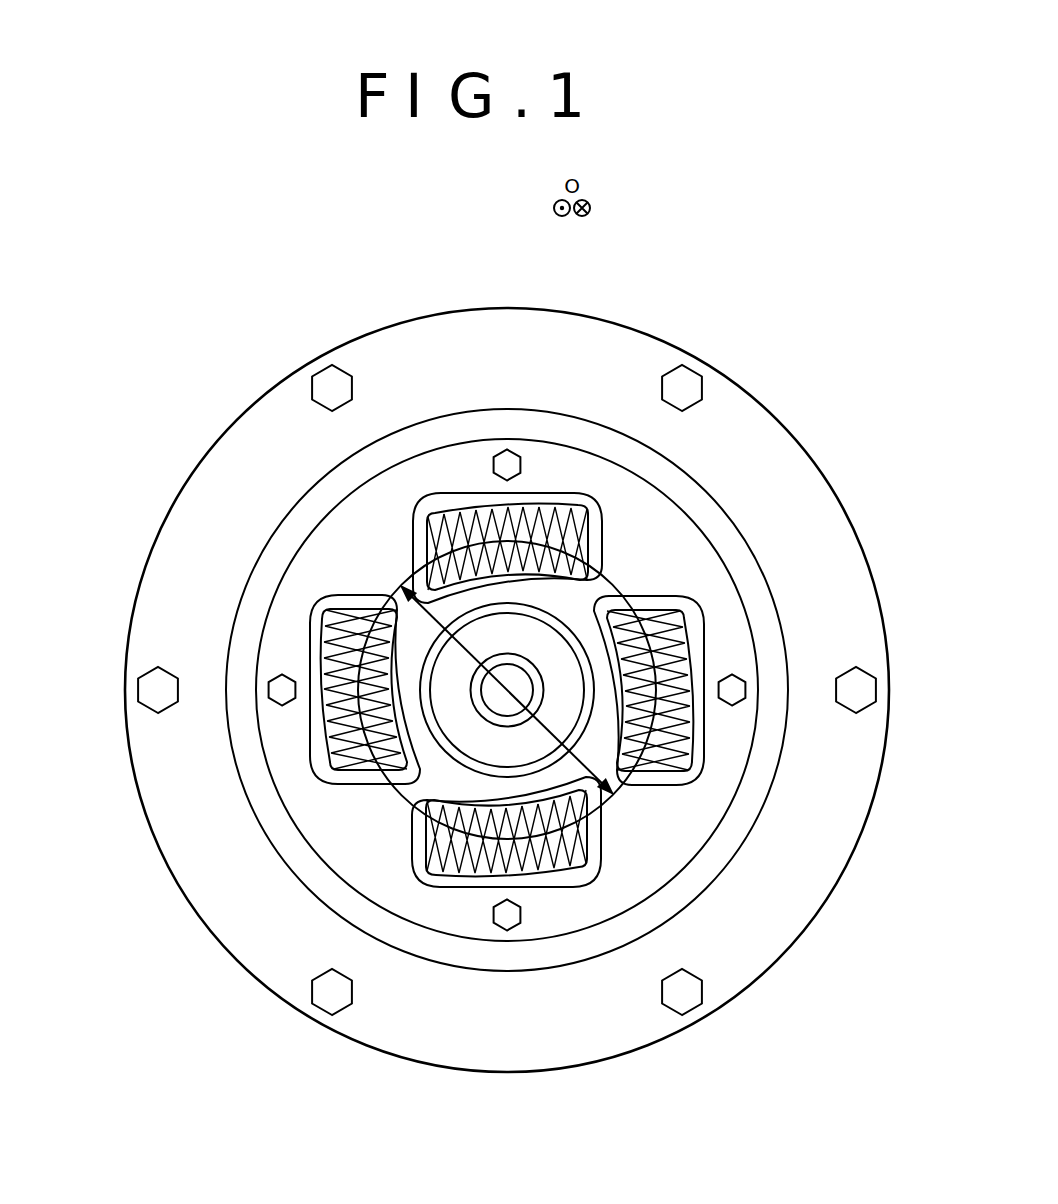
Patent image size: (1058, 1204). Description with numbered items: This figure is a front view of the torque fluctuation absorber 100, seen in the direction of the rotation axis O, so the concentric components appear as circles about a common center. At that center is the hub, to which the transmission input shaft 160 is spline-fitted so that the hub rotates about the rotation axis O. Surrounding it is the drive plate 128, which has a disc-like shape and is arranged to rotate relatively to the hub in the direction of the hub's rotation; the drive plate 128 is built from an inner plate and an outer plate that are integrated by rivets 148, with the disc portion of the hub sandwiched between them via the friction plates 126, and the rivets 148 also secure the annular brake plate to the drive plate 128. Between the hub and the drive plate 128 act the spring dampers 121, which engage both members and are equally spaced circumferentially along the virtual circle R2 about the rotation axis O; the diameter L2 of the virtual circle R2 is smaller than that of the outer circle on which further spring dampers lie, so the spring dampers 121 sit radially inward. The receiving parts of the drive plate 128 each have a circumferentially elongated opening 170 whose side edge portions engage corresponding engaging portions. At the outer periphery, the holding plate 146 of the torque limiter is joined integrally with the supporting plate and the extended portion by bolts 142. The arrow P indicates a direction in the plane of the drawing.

The torque fluctuation absorber 100 is at (728, 298).
The spring dampers 121 is at (556, 527).
The friction plates 126 is at (573, 647).
The drive plate 128 is at (693, 813).
The bolts 142 is at (688, 997).
The holding plate 146 is at (508, 1043).
The rivets 148 is at (507, 917).
The transmission input shaft 160 is at (404, 580).
The opening 170 is at (457, 860).
The diameter of the virtual circle R2 L2 is at (575, 772).
The virtual circle R2 is at (403, 800).
The rotation axis O is at (507, 692).
The direction P is at (449, 247).